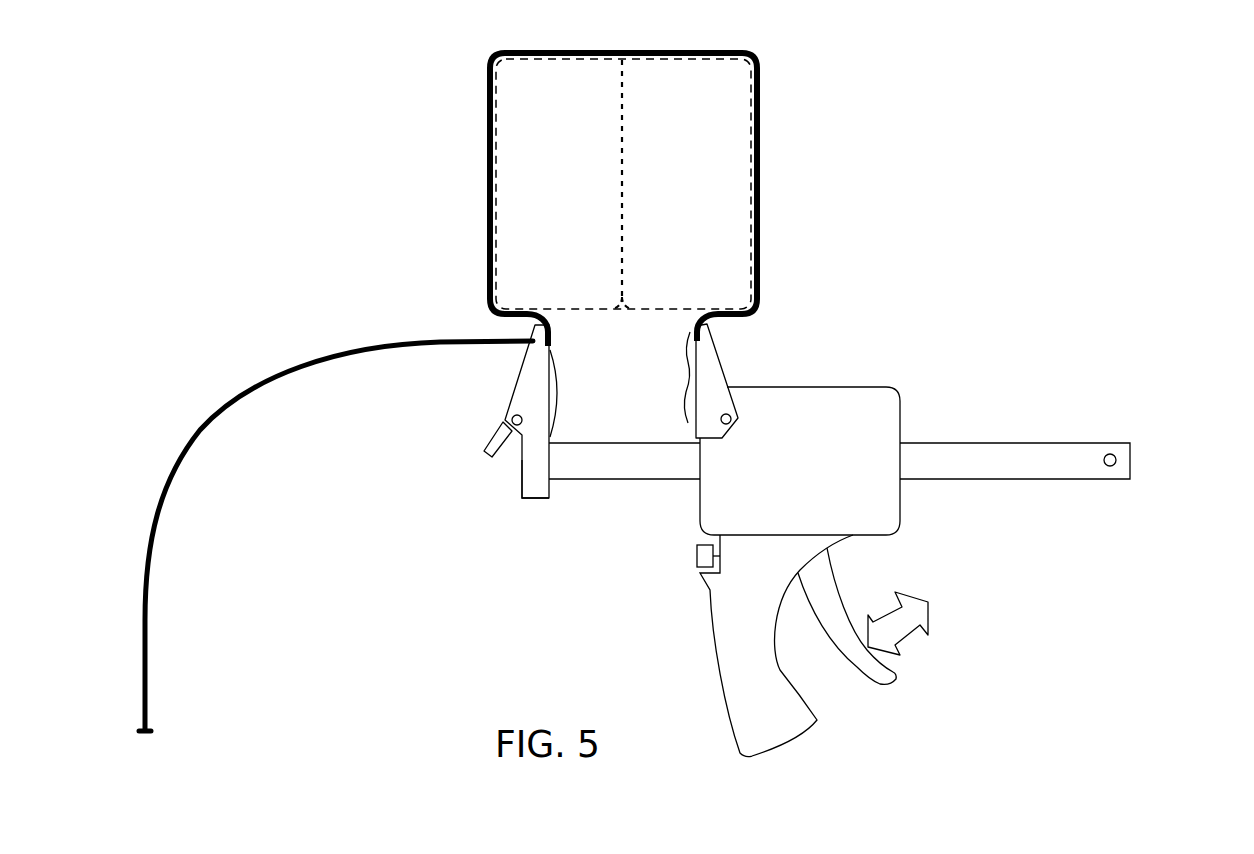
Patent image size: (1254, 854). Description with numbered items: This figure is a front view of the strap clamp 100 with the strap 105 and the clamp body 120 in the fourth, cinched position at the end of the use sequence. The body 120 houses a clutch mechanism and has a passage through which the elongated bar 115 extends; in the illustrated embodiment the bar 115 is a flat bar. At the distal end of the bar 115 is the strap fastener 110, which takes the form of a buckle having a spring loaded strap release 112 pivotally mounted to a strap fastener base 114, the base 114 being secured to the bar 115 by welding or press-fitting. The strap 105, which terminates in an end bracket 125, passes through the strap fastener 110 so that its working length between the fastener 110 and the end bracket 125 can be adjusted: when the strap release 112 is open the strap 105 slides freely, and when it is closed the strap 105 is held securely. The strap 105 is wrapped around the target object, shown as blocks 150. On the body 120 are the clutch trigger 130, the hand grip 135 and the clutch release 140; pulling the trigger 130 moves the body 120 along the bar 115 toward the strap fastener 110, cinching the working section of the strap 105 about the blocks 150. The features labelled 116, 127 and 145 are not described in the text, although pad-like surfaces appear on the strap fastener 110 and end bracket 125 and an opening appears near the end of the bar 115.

The strap clamp 100 is at (672, 405).
The strap 105 is at (760, 245).
The strap fastener 110 is at (550, 397).
The strap release 112 is at (489, 458).
The strap fastener base 114 is at (533, 499).
The bar 115 is at (605, 442).
The first clamp pad 116 is at (556, 395).
The body 120 is at (847, 387).
The end bracket 125 is at (717, 355).
The second clamp pad 127 is at (668, 377).
The clutch trigger 130 is at (835, 568).
The hand grip 135 is at (713, 662).
The clutch release 140 is at (697, 553).
The mounting hole 145 is at (1117, 460).
The blocks 150 is at (601, 309).